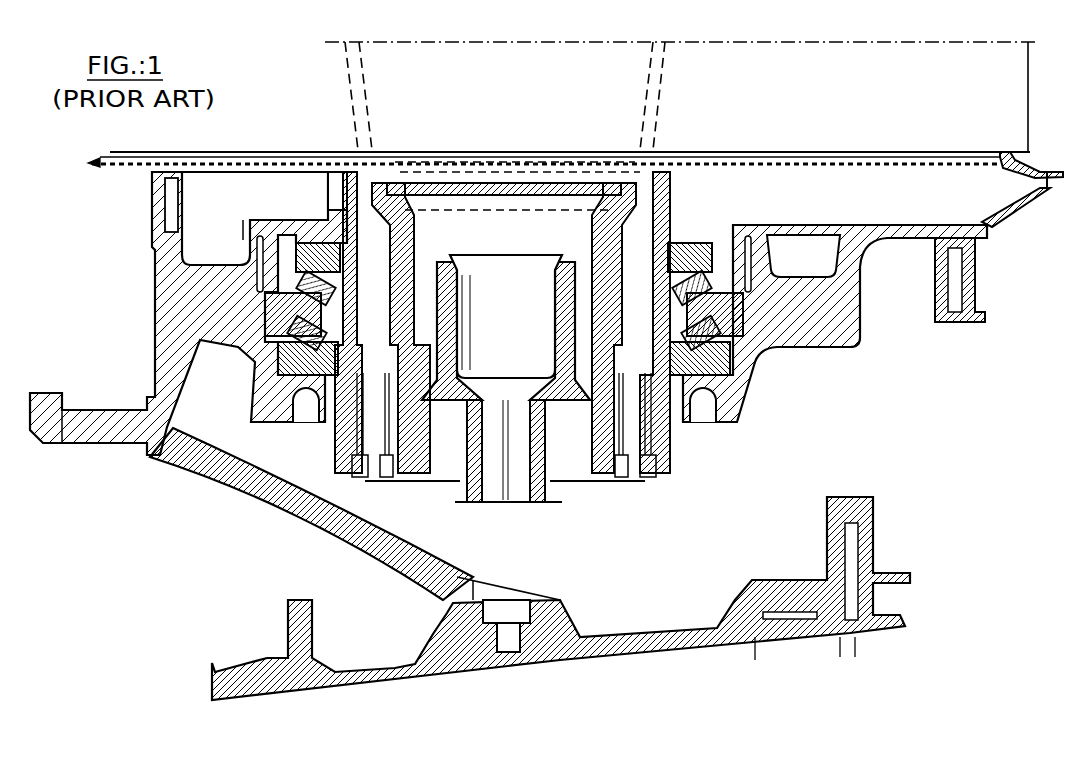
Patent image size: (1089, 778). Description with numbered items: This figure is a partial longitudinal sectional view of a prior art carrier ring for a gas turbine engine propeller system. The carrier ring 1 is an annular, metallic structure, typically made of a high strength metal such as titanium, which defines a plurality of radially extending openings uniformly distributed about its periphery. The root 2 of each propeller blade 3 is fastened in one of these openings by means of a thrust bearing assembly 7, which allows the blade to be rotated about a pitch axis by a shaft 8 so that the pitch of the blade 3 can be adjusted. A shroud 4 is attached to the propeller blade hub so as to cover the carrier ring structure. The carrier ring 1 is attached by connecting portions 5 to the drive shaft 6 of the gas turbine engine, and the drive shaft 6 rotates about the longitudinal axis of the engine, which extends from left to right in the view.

The carrier ring 1 is at (190, 205).
The root 2 is at (590, 408).
The propeller blade 3 is at (748, 118).
The shroud 4 is at (263, 156).
The connecting portion 5 is at (315, 512).
The drive shaft 6 is at (563, 648).
The thrust bearing assembly 7 is at (252, 347).
The shaft 8 is at (545, 493).